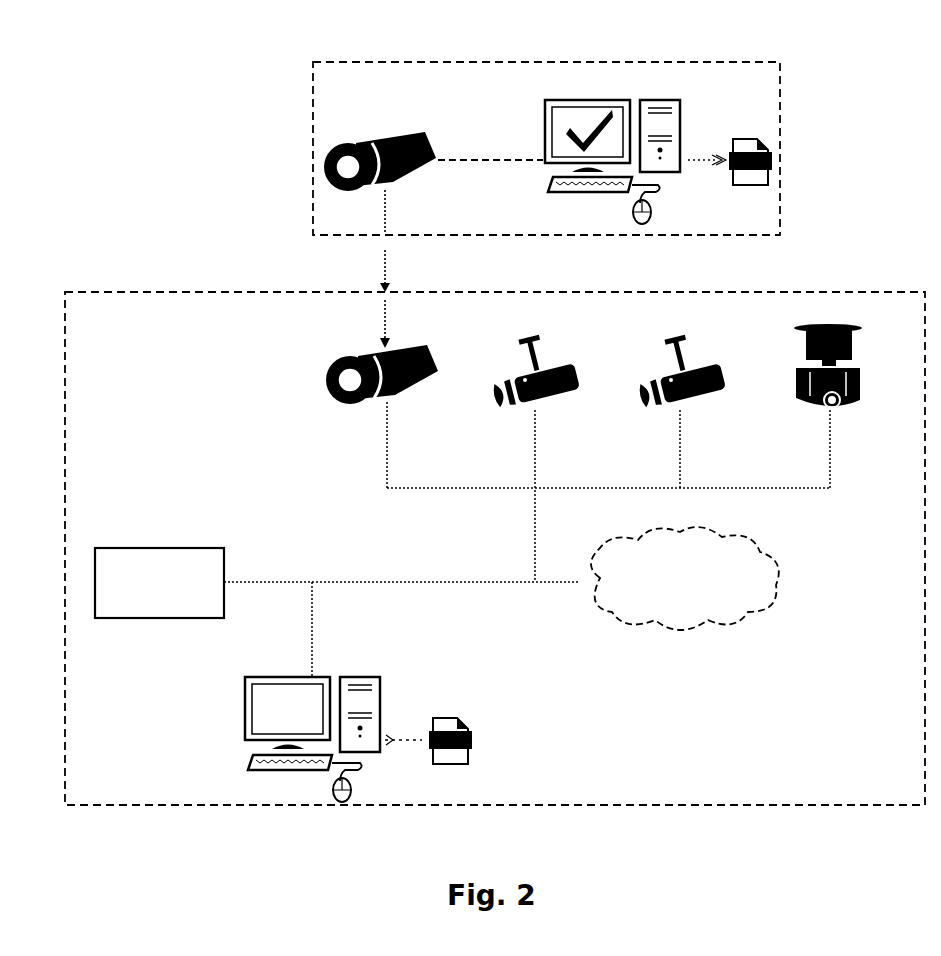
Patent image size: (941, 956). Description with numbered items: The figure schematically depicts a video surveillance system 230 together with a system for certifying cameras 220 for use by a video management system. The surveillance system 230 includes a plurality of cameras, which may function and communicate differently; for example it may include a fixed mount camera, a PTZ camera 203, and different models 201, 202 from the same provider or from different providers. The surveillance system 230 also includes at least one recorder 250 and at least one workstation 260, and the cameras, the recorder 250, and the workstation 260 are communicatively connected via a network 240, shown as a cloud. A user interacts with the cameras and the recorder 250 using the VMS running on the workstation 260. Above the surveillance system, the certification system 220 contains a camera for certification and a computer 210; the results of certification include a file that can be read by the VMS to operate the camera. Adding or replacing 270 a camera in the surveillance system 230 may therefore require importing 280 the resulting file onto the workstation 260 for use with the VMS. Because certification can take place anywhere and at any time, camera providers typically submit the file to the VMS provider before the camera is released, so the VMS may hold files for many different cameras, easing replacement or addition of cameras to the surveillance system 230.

The camera 201 is at (545, 403).
The camera 202 is at (693, 400).
The PTZ camera 203 is at (855, 408).
The computer 210 is at (543, 116).
The system for certifying cameras 220 is at (550, 60).
The video surveillance system 230 is at (857, 289).
The network 240 is at (685, 578).
The recorder 250 is at (159, 583).
The workstation 260 is at (242, 704).
The adding or replacing a camera 270 is at (378, 282).
The importing the file 280 is at (406, 732).